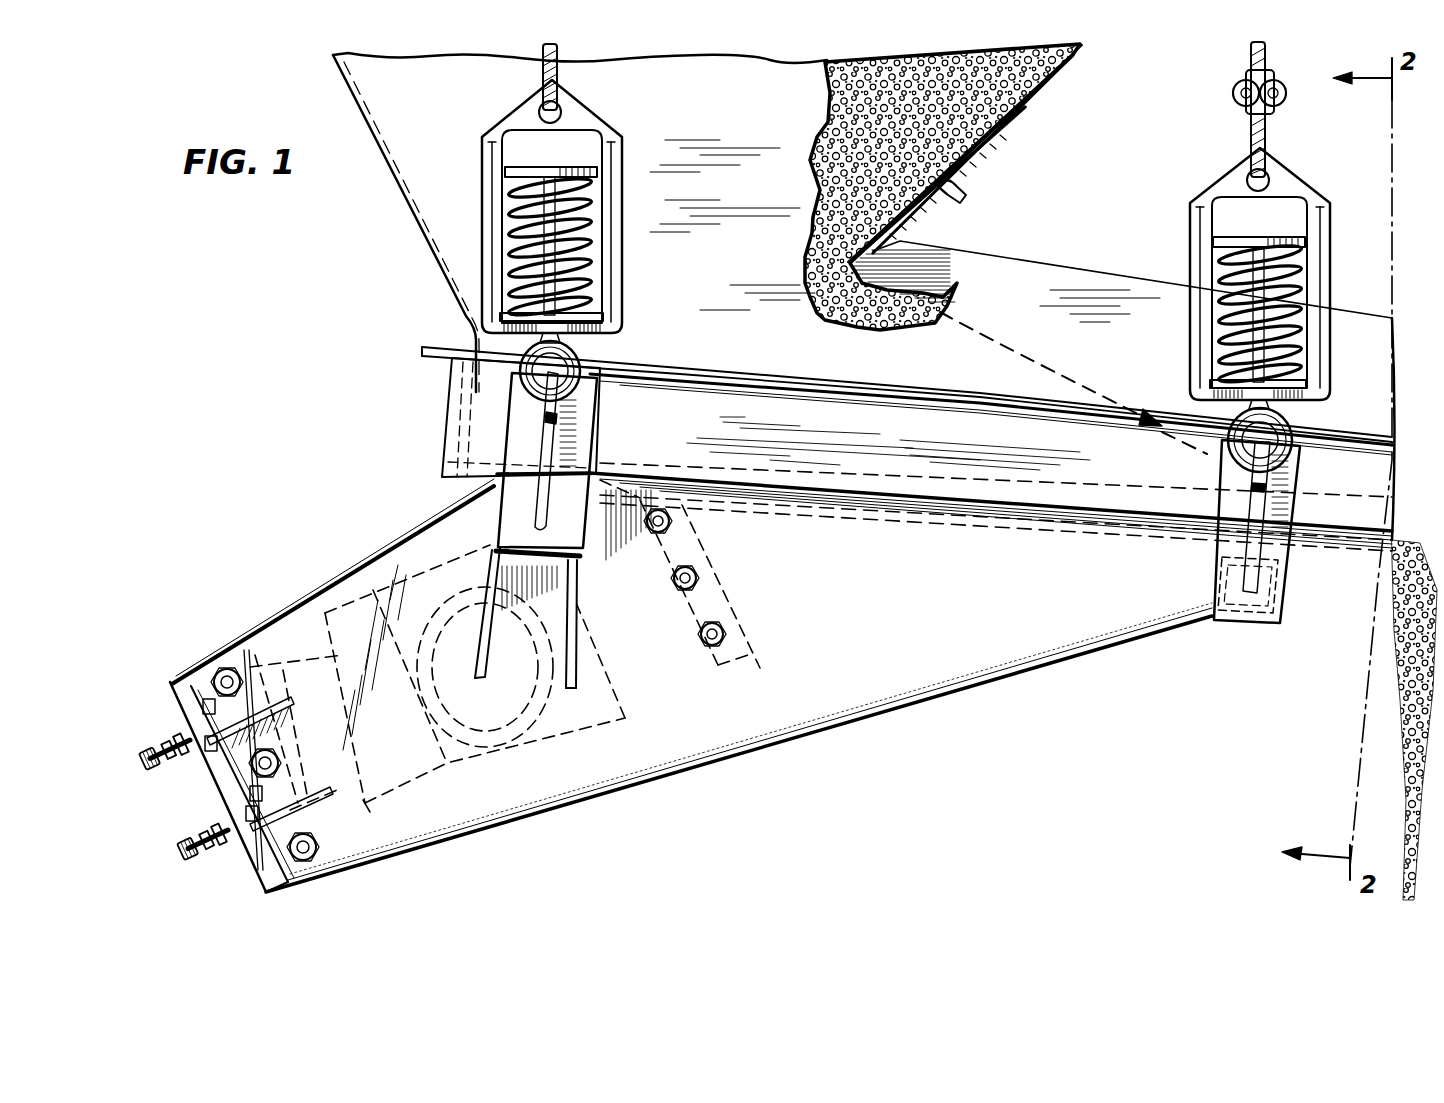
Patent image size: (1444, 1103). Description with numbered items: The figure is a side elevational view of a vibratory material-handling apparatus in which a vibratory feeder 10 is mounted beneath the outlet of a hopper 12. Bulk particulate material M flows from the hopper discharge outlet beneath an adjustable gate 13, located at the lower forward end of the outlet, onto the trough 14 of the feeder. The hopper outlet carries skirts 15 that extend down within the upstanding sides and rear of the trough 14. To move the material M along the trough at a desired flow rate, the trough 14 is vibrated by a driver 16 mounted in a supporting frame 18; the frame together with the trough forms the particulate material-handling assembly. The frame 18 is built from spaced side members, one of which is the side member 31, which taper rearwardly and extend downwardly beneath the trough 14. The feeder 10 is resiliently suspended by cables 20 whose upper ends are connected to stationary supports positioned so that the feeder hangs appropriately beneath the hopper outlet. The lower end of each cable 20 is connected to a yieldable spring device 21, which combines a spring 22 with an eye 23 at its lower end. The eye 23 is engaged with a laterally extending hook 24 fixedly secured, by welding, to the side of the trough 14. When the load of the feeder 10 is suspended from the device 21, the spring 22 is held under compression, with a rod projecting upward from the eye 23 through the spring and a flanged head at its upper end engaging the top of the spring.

The vibratory feeder 10 is at (950, 362).
The hopper 12 is at (727, 107).
The adjustable gate 13 is at (956, 198).
The trough 14 is at (998, 433).
The skirts 15 is at (442, 420).
The driver 16 is at (543, 785).
The supporting frame 18 is at (853, 687).
The cables 20 is at (546, 62).
The yieldable spring device 21 is at (482, 221).
The spring 22 is at (1297, 293).
The eye 23 is at (1288, 424).
The hook 24 is at (563, 443).
The side member 31 is at (753, 750).
The material M is at (827, 322).